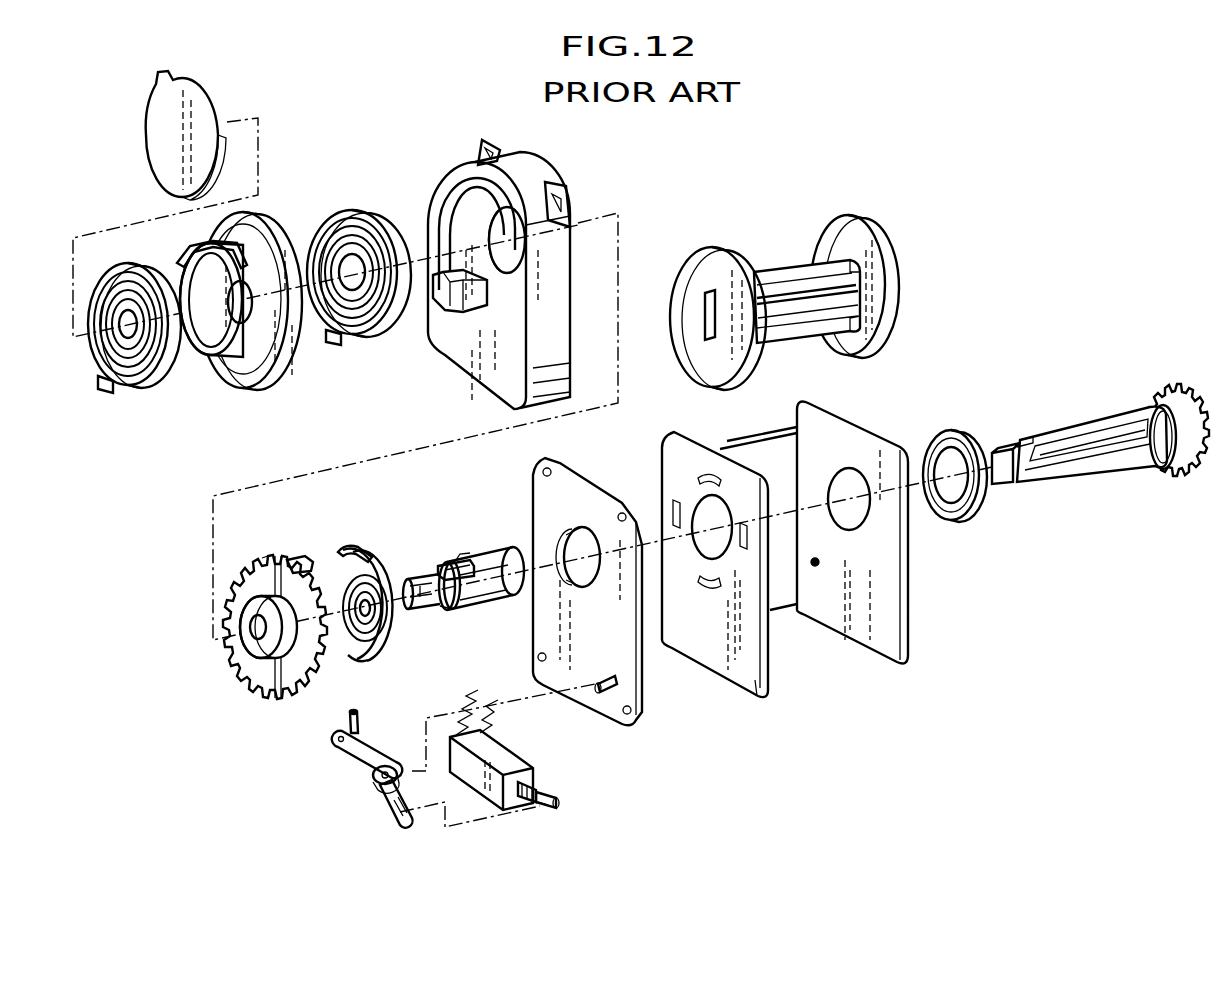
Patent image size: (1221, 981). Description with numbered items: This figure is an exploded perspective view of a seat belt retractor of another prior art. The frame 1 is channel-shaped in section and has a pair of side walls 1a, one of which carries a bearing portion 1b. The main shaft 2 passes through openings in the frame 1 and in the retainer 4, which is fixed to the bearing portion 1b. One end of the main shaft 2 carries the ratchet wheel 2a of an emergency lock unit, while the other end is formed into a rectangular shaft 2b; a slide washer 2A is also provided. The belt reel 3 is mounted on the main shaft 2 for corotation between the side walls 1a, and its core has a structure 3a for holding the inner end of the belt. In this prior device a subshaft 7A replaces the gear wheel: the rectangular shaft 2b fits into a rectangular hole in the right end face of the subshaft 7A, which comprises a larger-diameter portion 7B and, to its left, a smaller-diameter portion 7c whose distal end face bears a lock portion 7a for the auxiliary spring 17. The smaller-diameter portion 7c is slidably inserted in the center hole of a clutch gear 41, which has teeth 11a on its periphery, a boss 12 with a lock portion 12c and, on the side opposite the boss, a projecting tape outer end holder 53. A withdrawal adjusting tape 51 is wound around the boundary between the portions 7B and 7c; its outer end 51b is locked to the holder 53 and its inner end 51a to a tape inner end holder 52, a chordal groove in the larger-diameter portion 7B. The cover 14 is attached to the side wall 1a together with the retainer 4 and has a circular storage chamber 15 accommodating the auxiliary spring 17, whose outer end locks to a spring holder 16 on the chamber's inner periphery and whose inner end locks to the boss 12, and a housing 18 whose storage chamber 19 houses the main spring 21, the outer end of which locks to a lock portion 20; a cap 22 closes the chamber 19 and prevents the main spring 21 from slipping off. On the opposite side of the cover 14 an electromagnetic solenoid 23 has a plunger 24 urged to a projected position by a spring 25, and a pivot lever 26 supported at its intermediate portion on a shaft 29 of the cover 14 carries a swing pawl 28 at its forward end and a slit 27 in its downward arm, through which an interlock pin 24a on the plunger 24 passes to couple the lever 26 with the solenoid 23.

The frame 1 is at (840, 640).
The side walls 1a is at (757, 690).
The bearing portion 1b is at (700, 500).
The main shaft 2 is at (1095, 463).
The ratchet wheel 2a is at (1163, 387).
The rectangular shaft 2b is at (1007, 437).
The slide washer 2A is at (950, 430).
The belt reel 3 is at (784, 300).
The core structure 3a is at (803, 300).
The retainer 4 is at (643, 688).
The subshaft 7A is at (477, 550).
The larger-diameter portion 7B is at (510, 597).
The lock portion 7a is at (413, 617).
The smaller-diameter portion 7c is at (440, 600).
The teeth 11a is at (267, 552).
The boss 12 is at (255, 652).
The lock portion 12c is at (250, 614).
The cover 14 is at (527, 167).
The circular storage chamber 15 is at (470, 187).
The spring holder 16 is at (443, 307).
The auxiliary spring 17 is at (367, 338).
The housing 18 is at (257, 377).
The storage chamber 19 is at (213, 352).
The lock portion 20 is at (188, 253).
The main spring 21 is at (147, 385).
The cap 22 is at (160, 130).
The electromagnetic solenoid 23 is at (525, 755).
The plunger 24 is at (550, 805).
The interlock pin 24a is at (527, 807).
The spring 25 is at (540, 790).
The pivot lever 26 is at (358, 762).
The slit 27 is at (395, 810).
The swing pawl 28 is at (345, 720).
The shaft 29 is at (600, 690).
The clutch gear 41 is at (267, 697).
The withdrawal adjusting tape 51 is at (392, 578).
The spring inner end 51a is at (355, 650).
The spring outer hook 51b is at (348, 547).
The tape inner end holder 52 is at (472, 613).
The tape outer end holder 53 is at (300, 560).